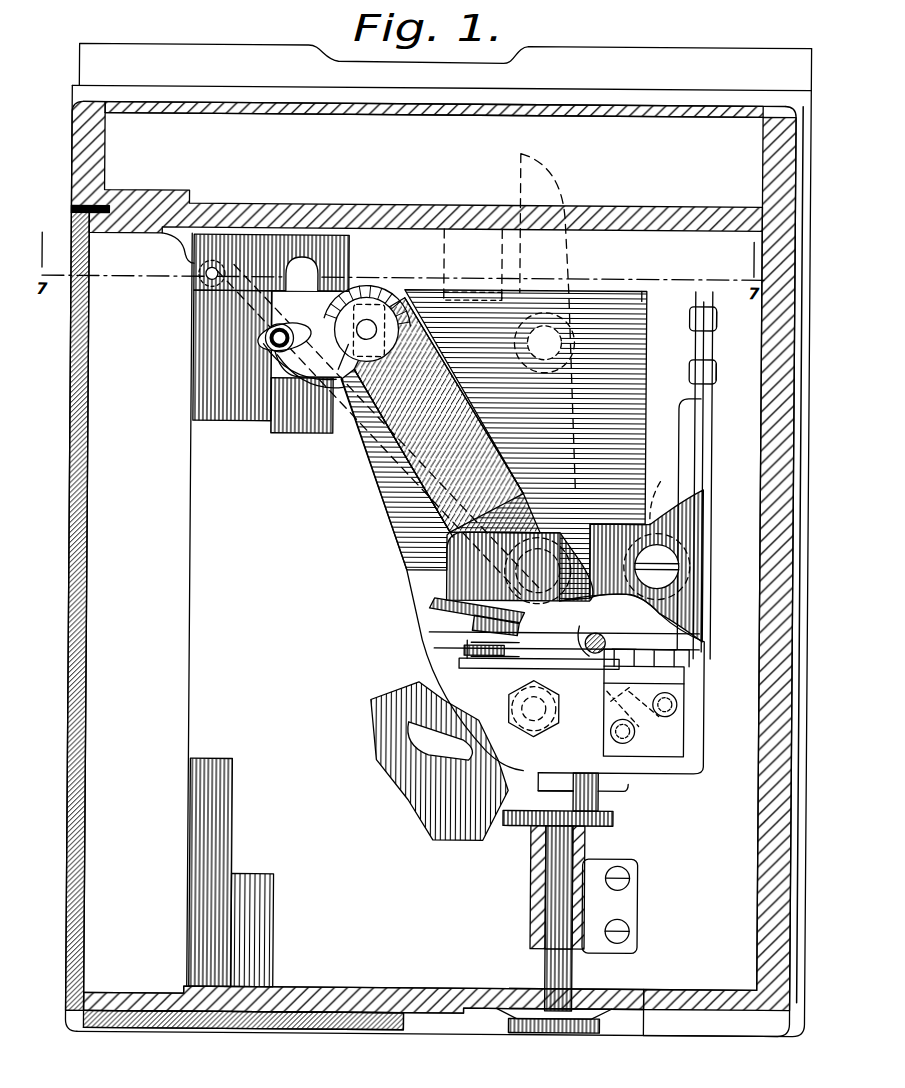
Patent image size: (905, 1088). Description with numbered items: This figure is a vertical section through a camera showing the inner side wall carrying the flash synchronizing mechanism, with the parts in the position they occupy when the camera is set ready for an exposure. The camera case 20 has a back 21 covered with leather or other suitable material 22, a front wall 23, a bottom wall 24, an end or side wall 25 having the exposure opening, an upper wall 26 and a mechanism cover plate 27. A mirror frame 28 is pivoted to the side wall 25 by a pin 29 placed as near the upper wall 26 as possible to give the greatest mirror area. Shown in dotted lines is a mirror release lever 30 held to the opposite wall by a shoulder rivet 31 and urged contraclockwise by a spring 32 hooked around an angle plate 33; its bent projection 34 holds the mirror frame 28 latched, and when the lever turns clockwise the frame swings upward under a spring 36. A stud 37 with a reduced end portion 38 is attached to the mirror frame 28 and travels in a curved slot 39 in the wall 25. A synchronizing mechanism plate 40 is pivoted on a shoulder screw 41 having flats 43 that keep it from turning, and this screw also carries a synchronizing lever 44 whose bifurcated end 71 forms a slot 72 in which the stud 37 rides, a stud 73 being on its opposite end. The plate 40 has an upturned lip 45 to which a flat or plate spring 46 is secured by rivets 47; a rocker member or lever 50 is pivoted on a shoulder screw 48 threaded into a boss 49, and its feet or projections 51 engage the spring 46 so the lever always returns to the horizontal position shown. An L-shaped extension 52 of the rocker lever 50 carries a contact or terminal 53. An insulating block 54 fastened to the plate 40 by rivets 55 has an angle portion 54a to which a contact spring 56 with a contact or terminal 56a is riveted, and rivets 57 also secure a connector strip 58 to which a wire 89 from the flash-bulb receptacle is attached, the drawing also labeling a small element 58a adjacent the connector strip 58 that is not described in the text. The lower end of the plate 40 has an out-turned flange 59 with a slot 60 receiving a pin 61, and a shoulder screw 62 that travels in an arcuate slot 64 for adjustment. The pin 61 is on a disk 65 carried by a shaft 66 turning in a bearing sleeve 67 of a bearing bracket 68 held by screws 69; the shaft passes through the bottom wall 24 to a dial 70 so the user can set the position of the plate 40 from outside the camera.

The camera case 20 is at (712, 125).
The back 21 is at (78, 580).
The leather or other suitable material 22 is at (70, 578).
The front wall 23 is at (762, 937).
The bottom wall 24 is at (388, 996).
The end or side wall 25 is at (190, 548).
The upper wall 26 is at (655, 216).
The mechanism cover plate 27 is at (667, 108).
The mirror frame 28 is at (340, 442).
The pin 29 is at (204, 278).
The mirror release lever 30 is at (570, 242).
The shoulder rivet 31 is at (562, 342).
The spring 32 is at (575, 382).
The angle plate 33 is at (442, 238).
The projection 34 is at (435, 605).
The spring 36 is at (183, 263).
The stud 37 is at (268, 341).
The reduced end portion 38 is at (262, 352).
The curved slot 39 is at (305, 260).
The synchronizing mechanism plate 40 is at (662, 298).
The shoulder screw 41 is at (345, 348).
The flats 43 is at (398, 305).
The synchronizing lever 44 is at (410, 440).
The upturned lip 45 is at (697, 340).
The flat or plate spring 46 is at (712, 437).
The rivets 47 is at (716, 368).
The shoulder screw 48 is at (659, 543).
The boss 49 is at (658, 495).
The rocker member or lever 50 is at (446, 577).
The feet or projections 51 is at (700, 505).
The L-shaped extension 52 is at (473, 627).
The contact or terminal 53 is at (430, 632).
The insulating block 54 is at (682, 726).
The L-shaped or angle portion 54a is at (690, 684).
The rivets 55 is at (680, 703).
The contact spring 56 is at (460, 661).
The contact or terminal 56a is at (465, 650).
The rivets 57 is at (634, 710).
The connector strip 58 is at (690, 666).
The wire 58a is at (608, 641).
The out-turned end or flange 59 is at (628, 781).
The slot 60 is at (600, 795).
The pin 61 is at (574, 798).
The shoulder screw 62 is at (530, 735).
The arcuate slot 64 is at (412, 724).
The disk 65 is at (515, 826).
The shaft 66 is at (576, 970).
The bearing sleeve 67 is at (534, 868).
The bearing bracket 68 is at (632, 905).
The screws 69 is at (632, 877).
The dial 70 is at (558, 1030).
The bifurcated end 71 is at (300, 388).
The slot 72 is at (290, 372).
The stud 73 is at (578, 578).
The wire 89 is at (560, 646).